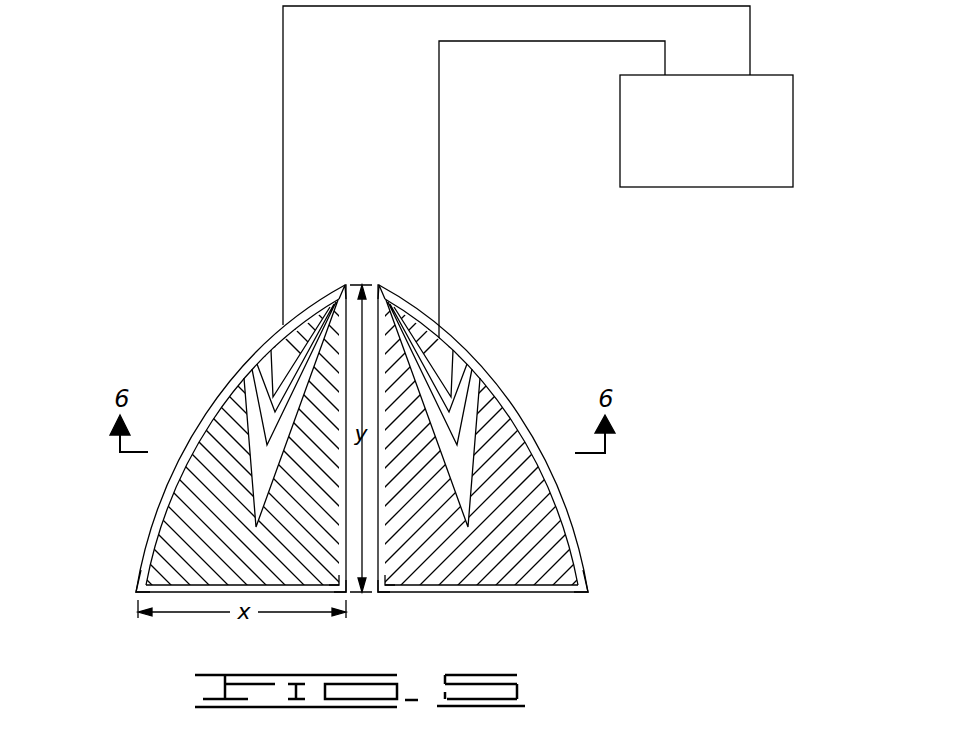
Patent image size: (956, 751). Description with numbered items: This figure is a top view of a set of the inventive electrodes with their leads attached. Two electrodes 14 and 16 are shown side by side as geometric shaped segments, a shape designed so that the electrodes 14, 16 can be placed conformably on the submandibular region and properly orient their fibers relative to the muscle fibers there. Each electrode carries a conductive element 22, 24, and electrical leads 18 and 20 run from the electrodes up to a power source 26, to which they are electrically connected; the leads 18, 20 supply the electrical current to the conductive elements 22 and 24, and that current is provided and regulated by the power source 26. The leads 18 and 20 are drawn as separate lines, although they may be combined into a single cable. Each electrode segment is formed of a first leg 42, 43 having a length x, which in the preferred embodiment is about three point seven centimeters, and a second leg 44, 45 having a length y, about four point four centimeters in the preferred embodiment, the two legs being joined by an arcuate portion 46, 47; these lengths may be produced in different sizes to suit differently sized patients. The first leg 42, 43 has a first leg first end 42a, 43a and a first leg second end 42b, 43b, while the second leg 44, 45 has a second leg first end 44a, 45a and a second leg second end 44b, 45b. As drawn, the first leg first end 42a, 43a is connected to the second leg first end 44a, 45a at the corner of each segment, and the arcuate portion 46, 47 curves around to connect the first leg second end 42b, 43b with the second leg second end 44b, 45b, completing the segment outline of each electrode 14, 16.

The electrode 14 is at (237, 380).
The electrode 16 is at (490, 392).
The electrical lead 18 is at (283, 108).
The electrical lead 20 is at (440, 135).
The conductive element 22 is at (178, 516).
The conductive element 24 is at (542, 513).
The power source 26 is at (705, 187).
The first leg 42 is at (200, 592).
The first leg first end 42a is at (350, 598).
The first leg second end 42b is at (137, 590).
The first leg 43 is at (527, 593).
The first leg first end 43a is at (380, 594).
The first leg second end 43b is at (587, 593).
The second leg 44 is at (333, 300).
The second leg first end 44a is at (407, 621).
The second leg second end 44b is at (348, 280).
The second leg 45 is at (388, 298).
The second leg first end 45a is at (445, 606).
The second leg second end 45b is at (373, 280).
The arcuate portion 46 is at (263, 337).
The arcuate portion 47 is at (465, 337).